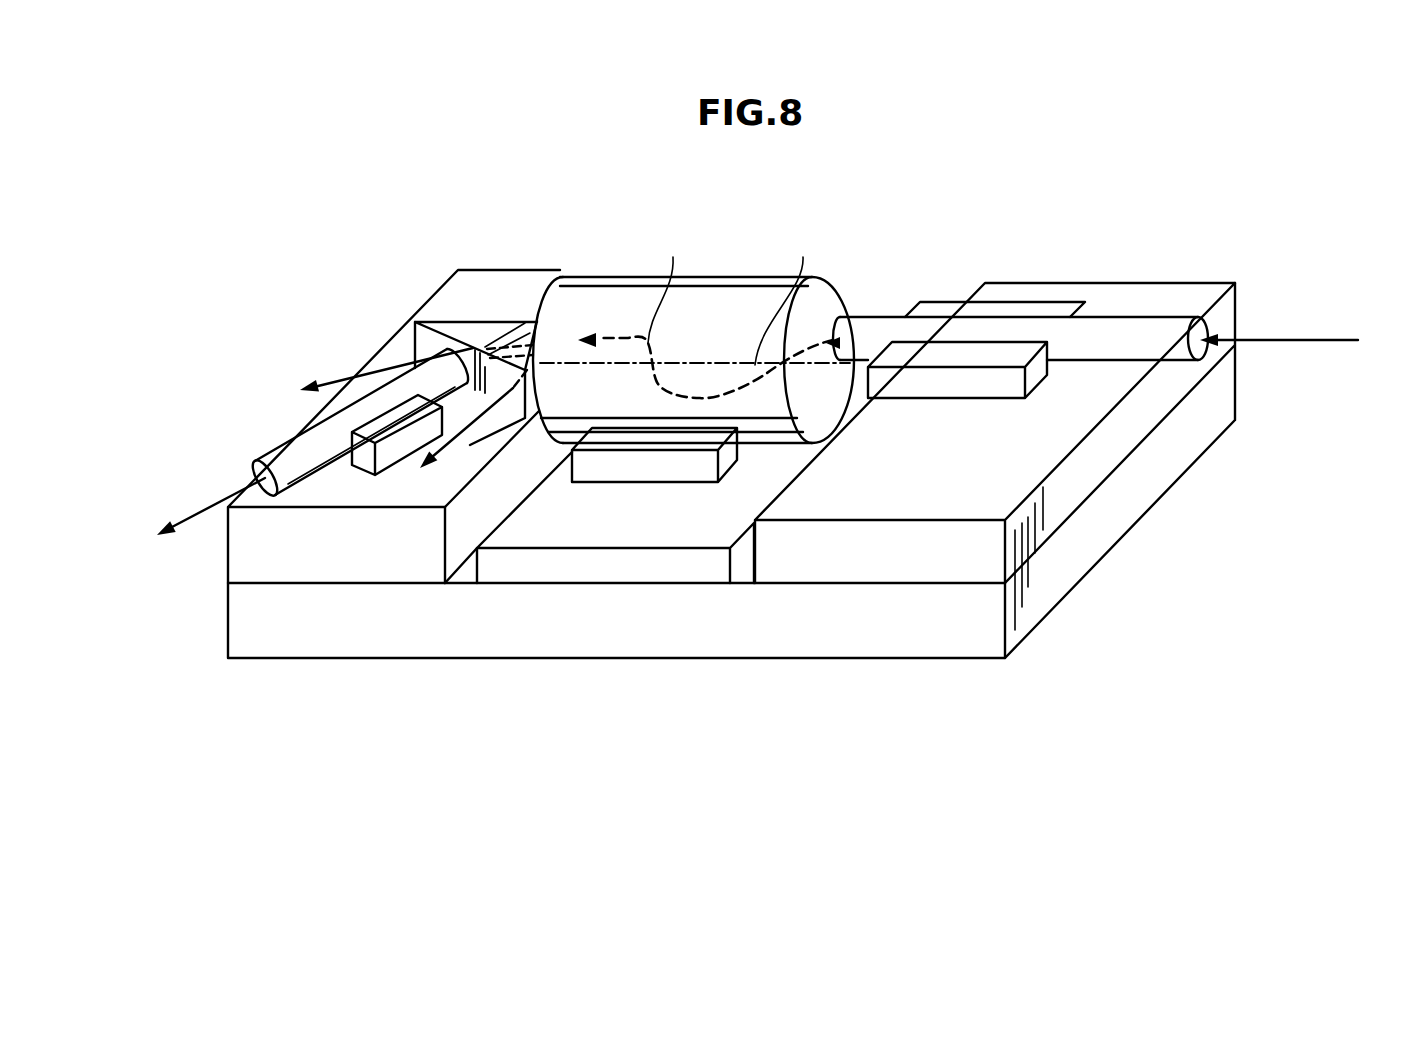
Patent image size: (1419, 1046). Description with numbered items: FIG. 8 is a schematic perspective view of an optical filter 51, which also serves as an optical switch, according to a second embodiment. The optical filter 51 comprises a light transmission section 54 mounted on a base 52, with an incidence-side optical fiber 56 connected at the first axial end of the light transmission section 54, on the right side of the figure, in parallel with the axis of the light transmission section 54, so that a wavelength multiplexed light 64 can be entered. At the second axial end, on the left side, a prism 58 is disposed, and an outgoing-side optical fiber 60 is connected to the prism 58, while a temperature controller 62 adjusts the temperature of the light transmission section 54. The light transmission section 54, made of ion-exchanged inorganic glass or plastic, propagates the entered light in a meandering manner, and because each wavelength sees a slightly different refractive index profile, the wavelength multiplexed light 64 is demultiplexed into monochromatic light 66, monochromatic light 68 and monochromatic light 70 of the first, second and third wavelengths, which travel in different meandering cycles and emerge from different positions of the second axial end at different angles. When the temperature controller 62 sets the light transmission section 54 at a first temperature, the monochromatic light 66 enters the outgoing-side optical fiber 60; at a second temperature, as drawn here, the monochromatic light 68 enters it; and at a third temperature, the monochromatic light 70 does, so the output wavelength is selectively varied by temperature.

The optical filter 51 is at (870, 180).
The base 52 is at (855, 658).
The light transmission section 54 is at (730, 272).
The incidence-side optical fiber 56 is at (1141, 317).
The prism 58 is at (503, 318).
The outgoing-side optical fiber 60 is at (272, 447).
The temperature controller 62 is at (613, 583).
The wavelength multiplexed light 64 is at (1315, 338).
The monochromatic light 66 is at (455, 432).
The monochromatic light 68 is at (190, 513).
The monochromatic light 70 is at (377, 362).